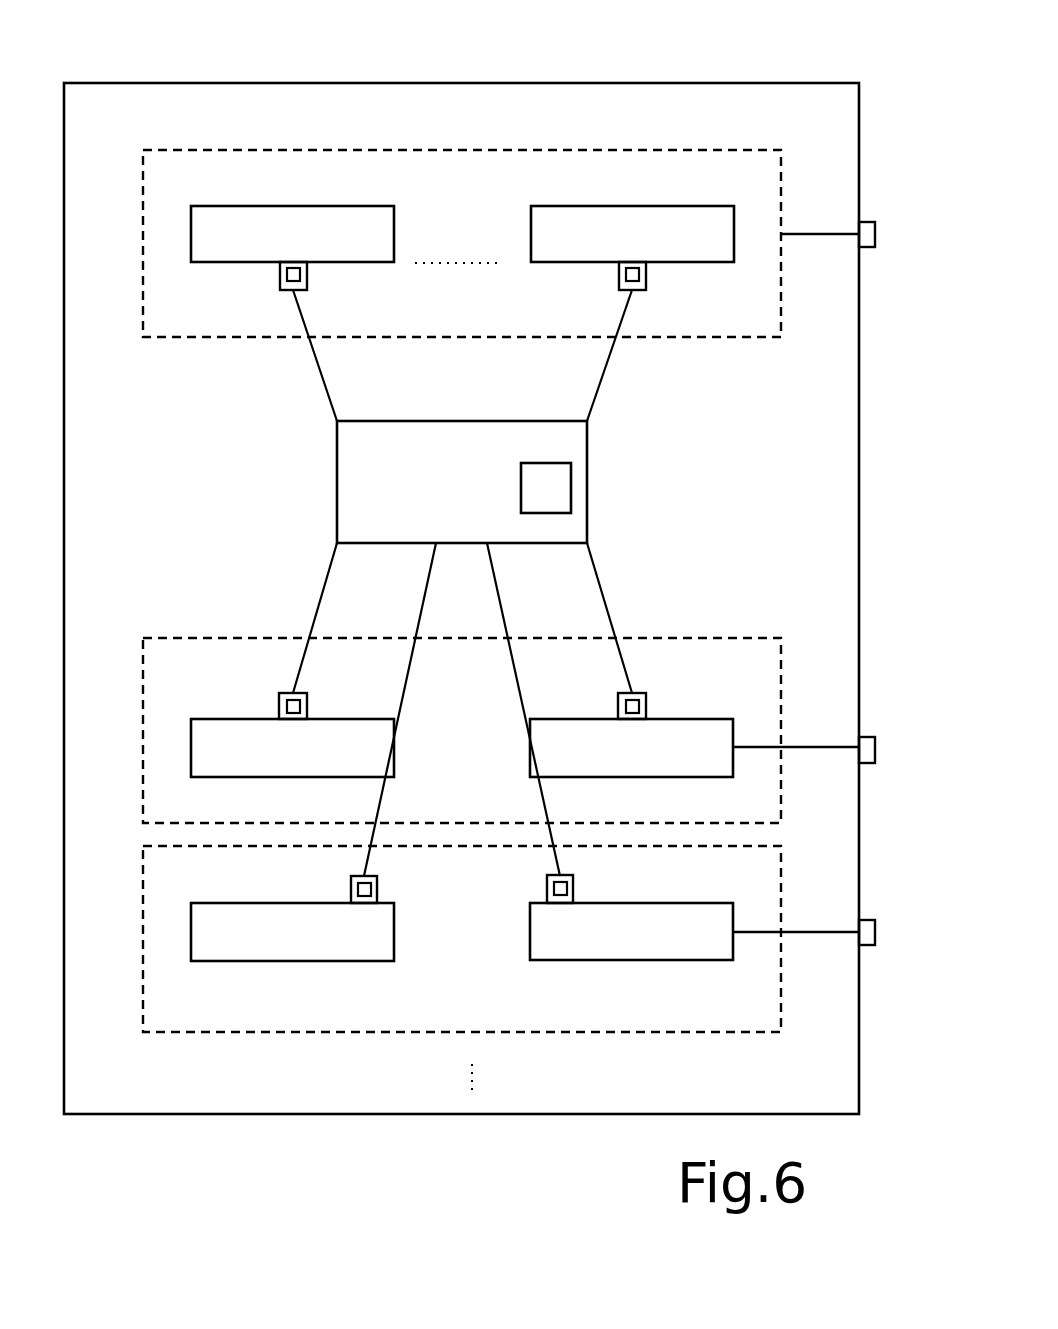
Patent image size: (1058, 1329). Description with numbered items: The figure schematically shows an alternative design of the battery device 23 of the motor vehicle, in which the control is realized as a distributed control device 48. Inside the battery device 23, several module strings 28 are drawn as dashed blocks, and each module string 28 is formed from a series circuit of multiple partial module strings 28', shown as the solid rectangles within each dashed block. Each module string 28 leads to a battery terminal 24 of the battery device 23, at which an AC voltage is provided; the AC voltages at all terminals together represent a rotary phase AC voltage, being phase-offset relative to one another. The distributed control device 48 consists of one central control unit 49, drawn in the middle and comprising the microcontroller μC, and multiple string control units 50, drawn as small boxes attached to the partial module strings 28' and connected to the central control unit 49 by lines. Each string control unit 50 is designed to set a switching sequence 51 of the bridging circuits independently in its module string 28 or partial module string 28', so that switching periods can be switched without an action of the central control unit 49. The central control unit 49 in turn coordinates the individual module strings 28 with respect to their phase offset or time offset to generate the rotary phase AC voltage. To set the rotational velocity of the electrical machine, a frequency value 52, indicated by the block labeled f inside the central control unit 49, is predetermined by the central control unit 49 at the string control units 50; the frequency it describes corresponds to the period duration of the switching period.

The battery device 23 is at (583, 83).
The battery terminal 24 is at (866, 222).
The module string 28 is at (426, 594).
The partial module string 28' is at (472, 562).
The control device 48 is at (283, 479).
The central control unit 49 is at (588, 448).
The string control unit 50 is at (307, 272).
The switching sequence 51 is at (287, 288).
The frequency value 52 is at (571, 487).